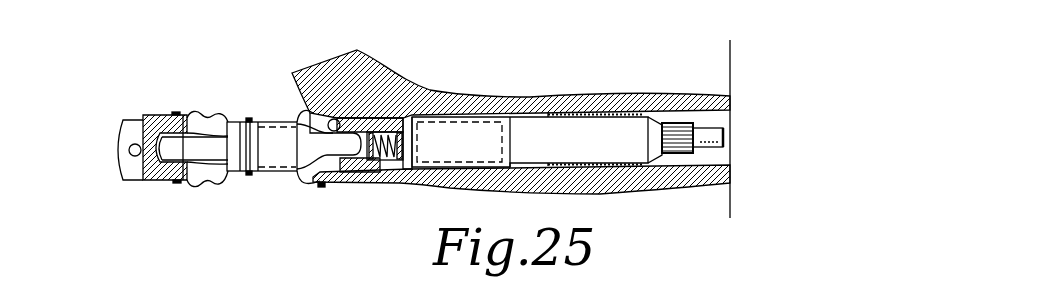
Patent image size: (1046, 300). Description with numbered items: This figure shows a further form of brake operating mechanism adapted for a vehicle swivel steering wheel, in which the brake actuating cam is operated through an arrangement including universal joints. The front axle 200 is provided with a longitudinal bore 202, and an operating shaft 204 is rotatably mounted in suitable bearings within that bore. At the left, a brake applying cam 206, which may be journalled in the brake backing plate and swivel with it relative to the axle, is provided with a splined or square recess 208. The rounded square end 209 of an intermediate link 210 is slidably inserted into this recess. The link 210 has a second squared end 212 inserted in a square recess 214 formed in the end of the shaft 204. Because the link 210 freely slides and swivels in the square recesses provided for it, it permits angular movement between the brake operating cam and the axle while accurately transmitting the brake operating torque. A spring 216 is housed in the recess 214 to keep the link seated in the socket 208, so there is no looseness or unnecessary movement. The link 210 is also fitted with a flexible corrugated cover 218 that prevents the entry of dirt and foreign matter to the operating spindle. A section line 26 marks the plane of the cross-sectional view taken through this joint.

The front axle 200 is at (398, 98).
The longitudinal bore 202 is at (537, 112).
The operating shaft 204 is at (598, 130).
The brake applying cam 206 is at (162, 116).
The splined or square recess 208 is at (186, 184).
The rounded square end 209 is at (150, 175).
The intermediate link 210 is at (278, 153).
The second squared end 212 is at (353, 154).
The square recess 214 is at (332, 112).
The spring 216 is at (394, 161).
The flexible corrugated cover 218 is at (208, 112).
The section line 26- 26 is at (357, 113).